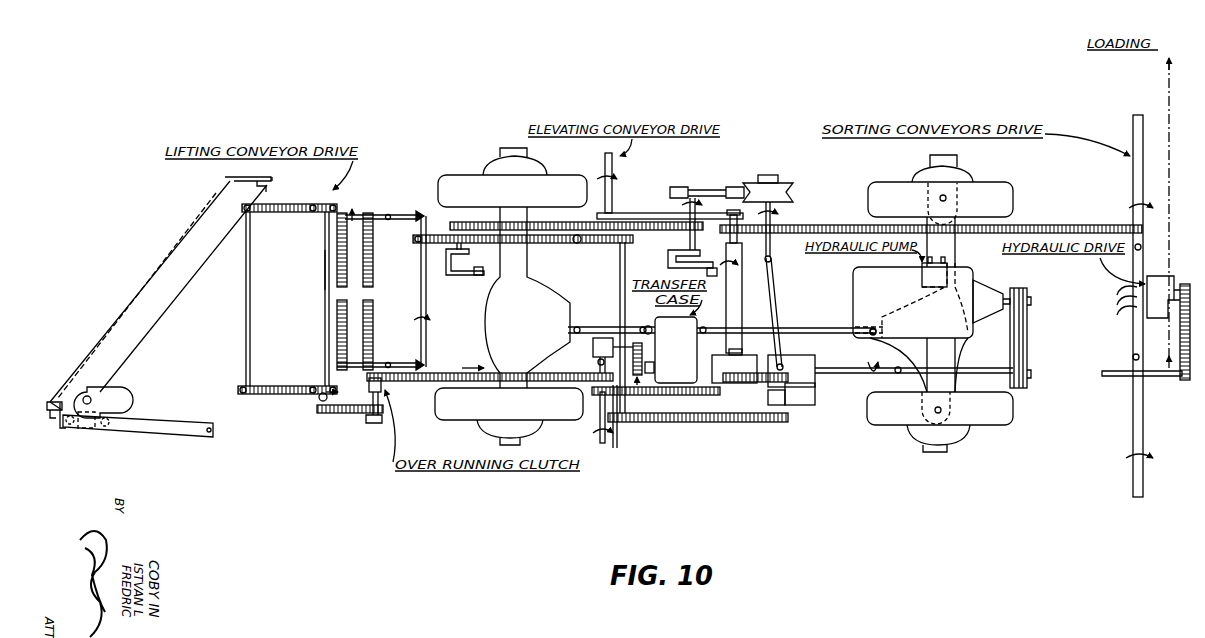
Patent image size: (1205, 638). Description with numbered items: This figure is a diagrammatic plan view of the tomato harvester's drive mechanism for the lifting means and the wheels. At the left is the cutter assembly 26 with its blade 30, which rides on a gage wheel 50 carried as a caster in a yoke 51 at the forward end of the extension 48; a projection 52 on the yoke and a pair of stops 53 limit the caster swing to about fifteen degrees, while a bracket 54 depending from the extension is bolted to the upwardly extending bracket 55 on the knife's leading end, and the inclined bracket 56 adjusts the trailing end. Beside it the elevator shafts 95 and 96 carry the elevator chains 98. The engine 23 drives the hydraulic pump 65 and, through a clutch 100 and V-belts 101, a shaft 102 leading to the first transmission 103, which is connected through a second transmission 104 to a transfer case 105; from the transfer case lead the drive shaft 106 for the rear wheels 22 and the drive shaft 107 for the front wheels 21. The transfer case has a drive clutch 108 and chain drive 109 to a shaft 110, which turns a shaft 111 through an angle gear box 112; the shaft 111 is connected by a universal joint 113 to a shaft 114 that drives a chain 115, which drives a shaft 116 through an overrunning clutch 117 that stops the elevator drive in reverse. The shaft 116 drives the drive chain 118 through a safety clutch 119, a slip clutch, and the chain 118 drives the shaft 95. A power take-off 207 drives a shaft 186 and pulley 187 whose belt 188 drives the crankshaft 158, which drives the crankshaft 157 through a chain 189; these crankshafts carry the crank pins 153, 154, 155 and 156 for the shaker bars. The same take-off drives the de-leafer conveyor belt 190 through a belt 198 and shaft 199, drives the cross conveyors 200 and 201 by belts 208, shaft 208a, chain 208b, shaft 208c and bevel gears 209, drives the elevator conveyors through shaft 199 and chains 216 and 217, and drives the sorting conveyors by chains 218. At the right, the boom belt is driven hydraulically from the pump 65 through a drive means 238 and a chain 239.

The cutter assembly 26 is at (135, 282).
The blade 30 is at (111, 324).
The bracket 55 is at (52, 400).
The gage wheel 50 is at (122, 388).
The yoke 51 is at (91, 393).
The projection 52 is at (97, 430).
The stops 53 is at (112, 420).
The bracket 54 is at (56, 428).
The extension 48 is at (190, 431).
The bracket 56 is at (256, 186).
The shaft 96 is at (250, 301).
The chains 98 is at (313, 212).
The transverse conveyor 201 is at (338, 250).
The transverse conveyor 200 is at (338, 333).
The shaft 95 is at (327, 275).
The shaft 208c is at (421, 292).
The bevel gears 209 is at (419, 213).
The drive chain 118 is at (318, 410).
The overrunning clutch 117 is at (369, 385).
The shaft 116 is at (372, 405).
The safety clutch 119 is at (368, 443).
The front wheels 21 is at (460, 175).
The crankshaft 157 is at (486, 234).
The chain 189 is at (576, 231).
The crank pin 153 is at (447, 263).
The crank pin 154 is at (476, 276).
The chain 217 is at (657, 204).
The belt 188 is at (731, 187).
The crankshaft 158 is at (696, 240).
The crank pin 155 is at (667, 258).
The crank pin 156 is at (718, 273).
The de-leafer conveyor belt 190 is at (742, 310).
The pulley 187 is at (788, 184).
The shaft 186 is at (774, 291).
The chains 218 is at (845, 226).
The rear wheels 22 is at (997, 182).
The hydraulic pump 65 is at (918, 283).
The engine 23 is at (893, 262).
The clutch 100 is at (986, 292).
The V-belts 101 is at (1028, 335).
The shaft 102 is at (980, 368).
The drive shaft 107 is at (601, 326).
The drive shaft 106 is at (818, 328).
The transfer case 105 is at (684, 357).
The chain drive 109 is at (645, 327).
The shaft 110 is at (654, 366).
The drive clutch 108 is at (637, 386).
The angle gear box 112 is at (593, 347).
The shaft 111 is at (598, 362).
The chain 115 is at (561, 373).
The universal joint 113 is at (599, 433).
The shaft 114 is at (616, 448).
The chain 216 is at (684, 391).
The belts 208 is at (746, 422).
The shaft 208a is at (620, 290).
The chain 208b is at (577, 246).
The second transmission 104 is at (730, 490).
The belt 198 is at (748, 385).
The shaft 199 is at (740, 353).
The first transmission 103 is at (815, 358).
The power take-off 207 is at (812, 406).
The drive means 238 is at (1137, 325).
The chain 239 is at (1182, 382).